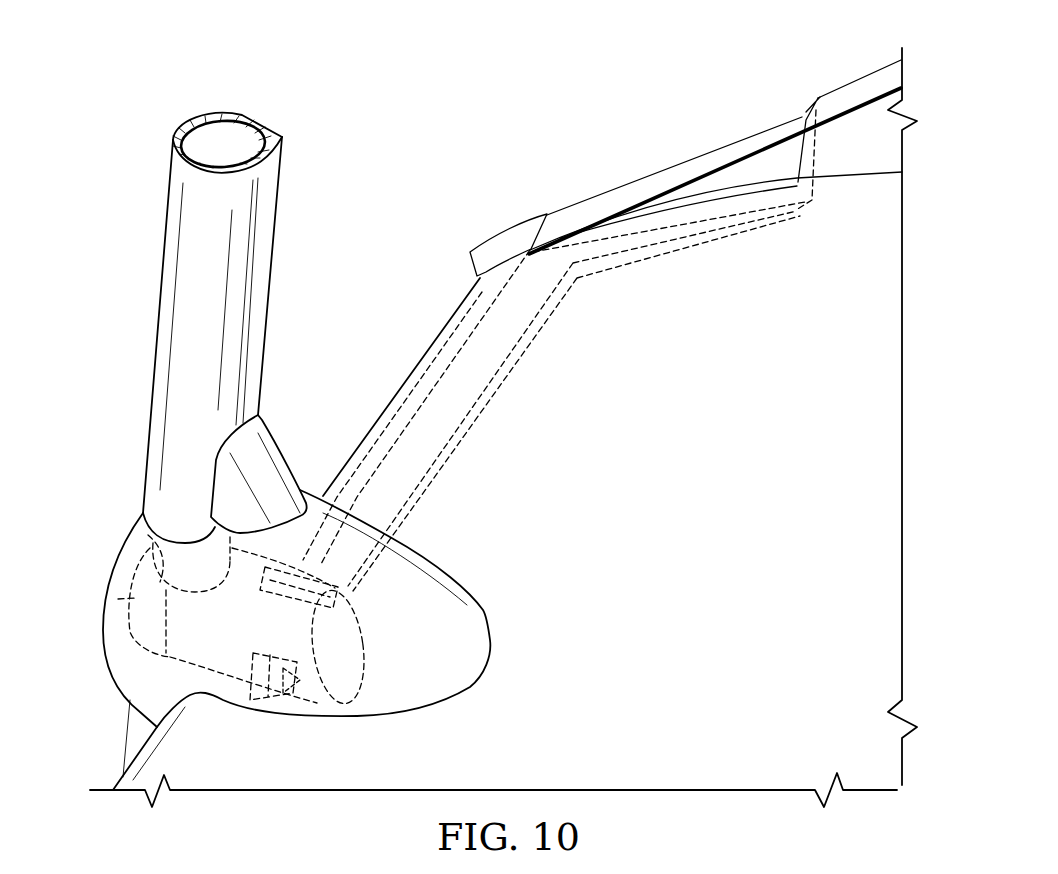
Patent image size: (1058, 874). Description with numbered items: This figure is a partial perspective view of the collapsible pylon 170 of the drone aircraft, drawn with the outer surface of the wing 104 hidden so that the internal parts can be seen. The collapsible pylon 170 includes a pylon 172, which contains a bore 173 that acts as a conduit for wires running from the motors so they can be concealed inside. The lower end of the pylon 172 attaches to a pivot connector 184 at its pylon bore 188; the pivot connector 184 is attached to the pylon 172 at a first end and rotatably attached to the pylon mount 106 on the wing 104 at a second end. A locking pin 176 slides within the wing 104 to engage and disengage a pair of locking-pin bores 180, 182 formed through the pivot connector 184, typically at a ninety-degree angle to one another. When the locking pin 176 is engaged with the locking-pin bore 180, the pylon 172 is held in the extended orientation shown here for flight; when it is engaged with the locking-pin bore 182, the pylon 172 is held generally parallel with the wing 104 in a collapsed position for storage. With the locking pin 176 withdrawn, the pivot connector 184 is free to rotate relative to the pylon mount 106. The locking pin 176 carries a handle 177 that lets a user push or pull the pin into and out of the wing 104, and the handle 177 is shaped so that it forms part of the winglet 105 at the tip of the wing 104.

The wing 104 is at (416, 408).
The winglet 105 is at (503, 412).
The pylon mount 106 is at (296, 640).
The collapsible pylon 170 is at (414, 421).
The pylon 172 is at (195, 328).
The bore 173 is at (222, 111).
The locking pin 176 is at (574, 401).
The handle 177 is at (715, 171).
The locking-pin bore 180 is at (263, 711).
The locking-pin bore 182 is at (275, 603).
The pivot connector 184 is at (199, 627).
The pylon bore 188 is at (153, 539).